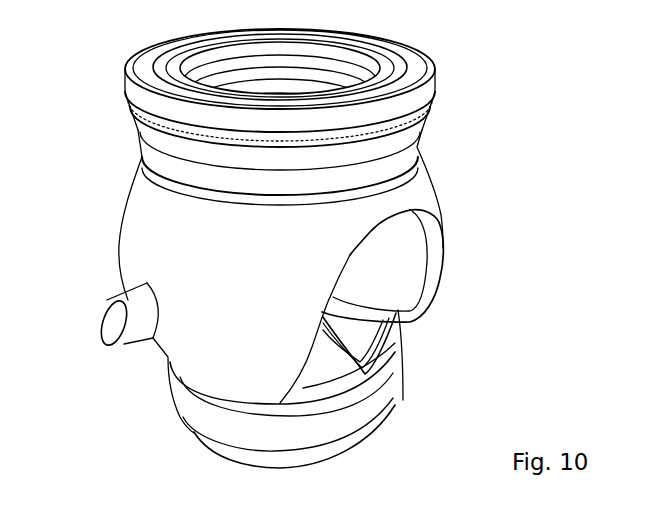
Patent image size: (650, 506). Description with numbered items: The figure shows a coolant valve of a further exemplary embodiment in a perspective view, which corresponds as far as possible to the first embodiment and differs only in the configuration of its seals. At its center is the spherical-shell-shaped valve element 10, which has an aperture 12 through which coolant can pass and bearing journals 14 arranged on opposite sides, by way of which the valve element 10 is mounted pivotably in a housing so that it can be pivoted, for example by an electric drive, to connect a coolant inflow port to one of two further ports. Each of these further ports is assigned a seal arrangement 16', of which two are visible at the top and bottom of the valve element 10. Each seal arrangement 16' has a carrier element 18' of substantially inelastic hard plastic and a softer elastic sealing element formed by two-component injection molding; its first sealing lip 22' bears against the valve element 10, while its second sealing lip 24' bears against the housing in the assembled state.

The valve element 10 is at (130, 229).
The aperture 12 is at (428, 268).
The bearing journal 14 is at (110, 322).
The seal arrangement 16' is at (303, 244).
The carrier element 18' is at (328, 142).
The first sealing lip 22' is at (379, 399).
The second sealing lip 24' is at (241, 71).